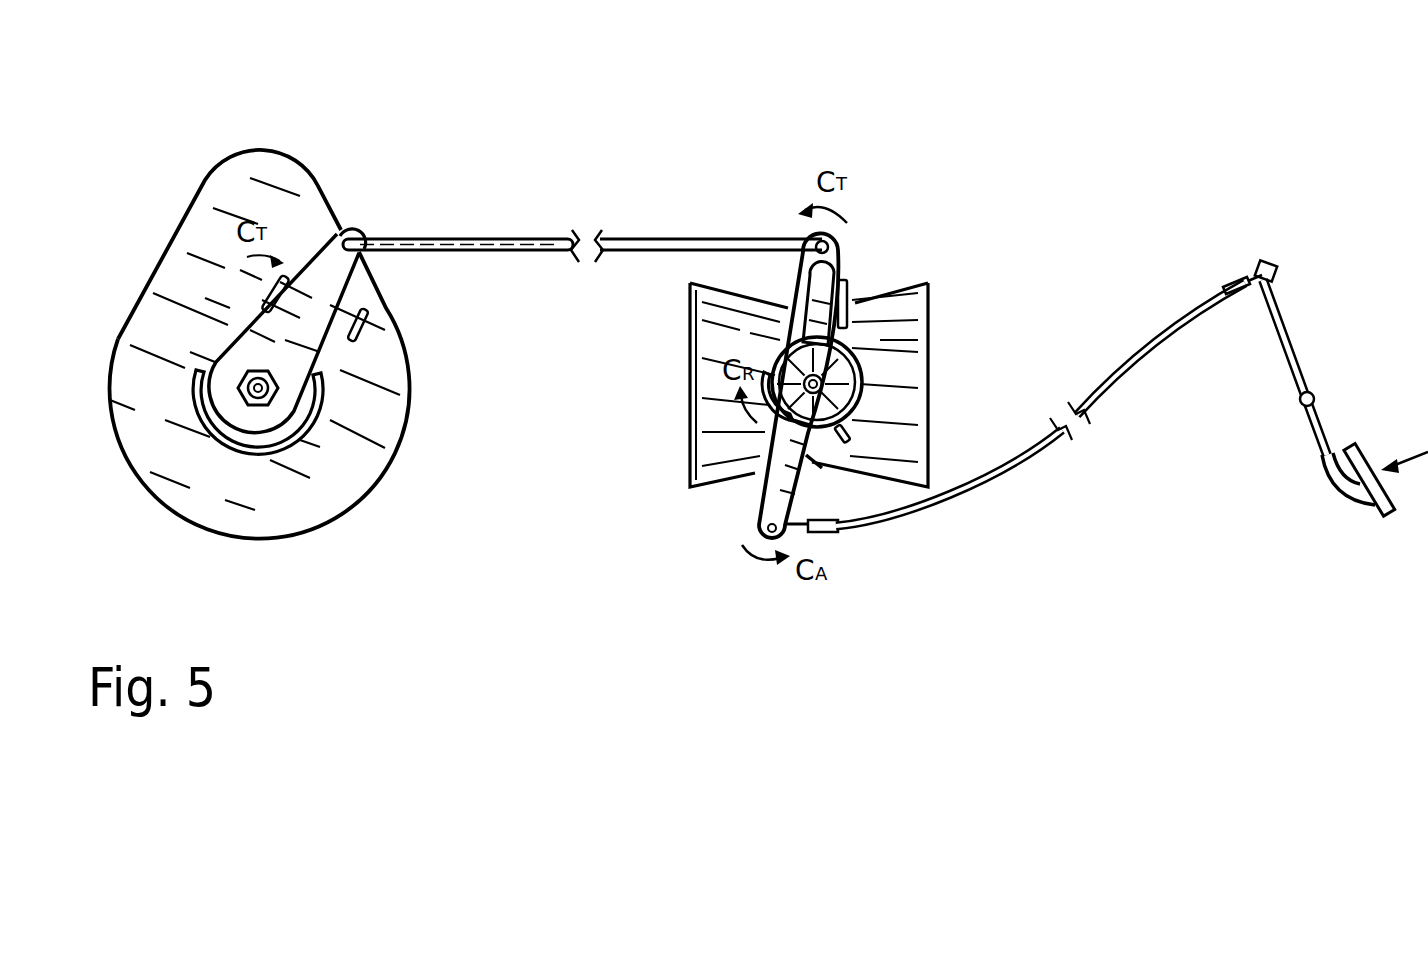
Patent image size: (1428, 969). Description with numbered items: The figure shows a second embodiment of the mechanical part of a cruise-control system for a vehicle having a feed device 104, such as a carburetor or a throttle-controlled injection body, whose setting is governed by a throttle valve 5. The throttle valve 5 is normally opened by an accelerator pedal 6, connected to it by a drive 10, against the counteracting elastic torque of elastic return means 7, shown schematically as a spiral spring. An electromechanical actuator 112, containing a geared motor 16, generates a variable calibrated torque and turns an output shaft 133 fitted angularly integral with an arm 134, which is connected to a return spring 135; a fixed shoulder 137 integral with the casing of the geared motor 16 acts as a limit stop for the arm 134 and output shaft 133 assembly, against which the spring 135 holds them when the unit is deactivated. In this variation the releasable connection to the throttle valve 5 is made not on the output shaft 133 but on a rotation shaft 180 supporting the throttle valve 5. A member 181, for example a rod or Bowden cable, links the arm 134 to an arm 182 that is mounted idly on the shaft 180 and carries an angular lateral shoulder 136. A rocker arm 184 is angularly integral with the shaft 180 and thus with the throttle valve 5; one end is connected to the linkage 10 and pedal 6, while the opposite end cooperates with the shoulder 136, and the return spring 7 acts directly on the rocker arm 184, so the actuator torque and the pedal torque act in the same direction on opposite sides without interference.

The throttle valve 5 is at (848, 436).
The accelerator pedal 6 is at (1328, 445).
The elastic return means 7 is at (762, 460).
The drive 10 is at (1097, 400).
The geared motor 16 is at (180, 300).
The feed device 104 is at (893, 285).
The electromechanical actuator 112 is at (265, 490).
The output shaft 133 is at (283, 389).
The arm 134 is at (336, 272).
The return spring 135 is at (305, 445).
The angular lateral shoulder 136 is at (846, 285).
The fixed shoulder 137 is at (378, 323).
The rotation shaft 180 is at (850, 380).
The member 181 is at (535, 243).
The arm 182 is at (803, 264).
The rocker arm 184 is at (813, 462).